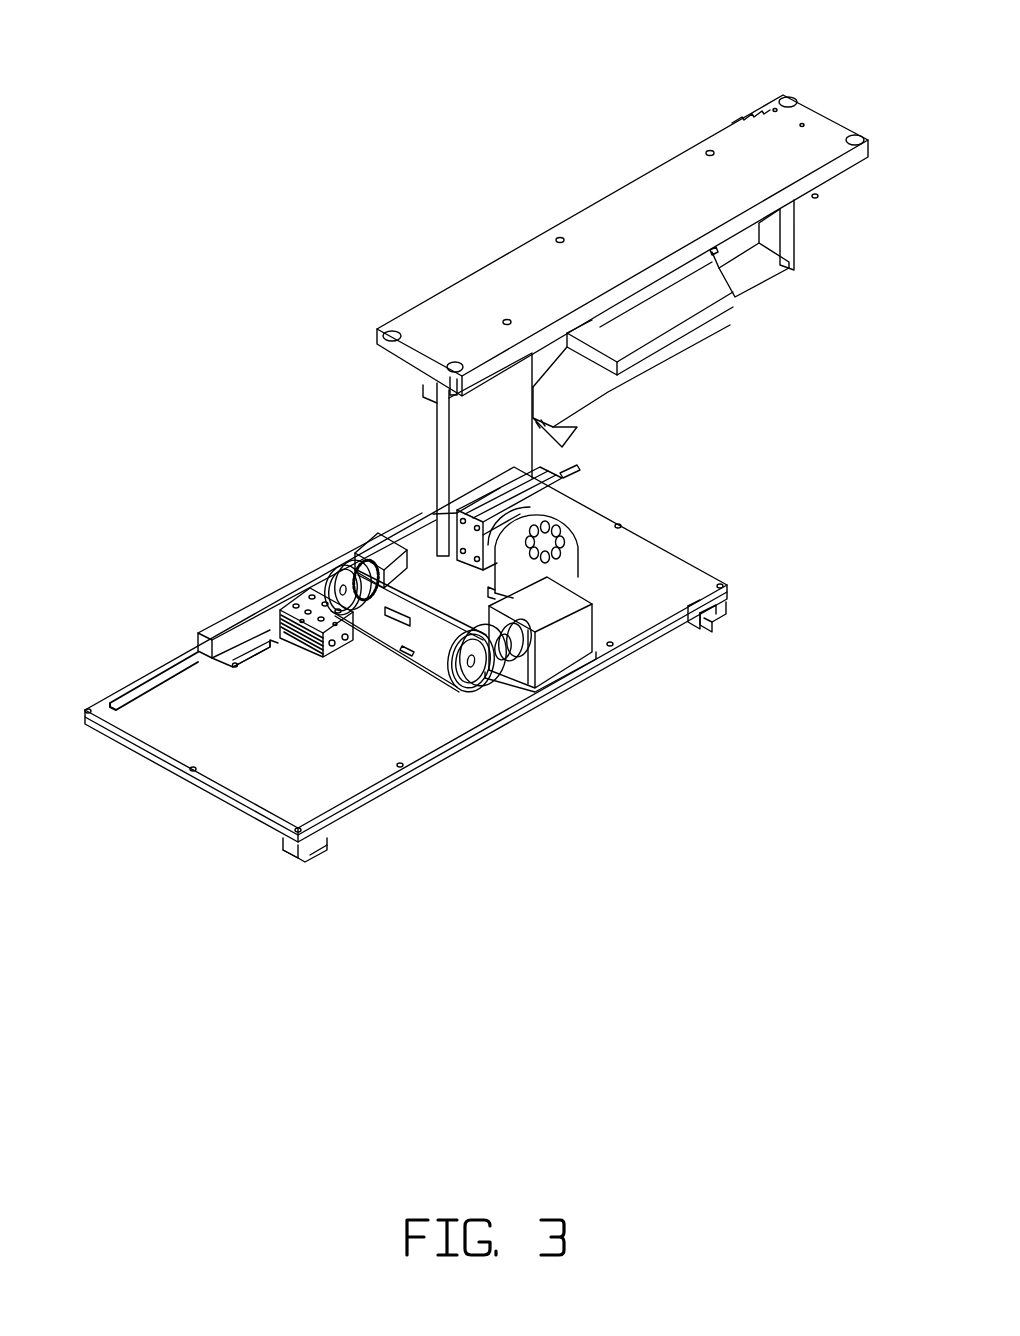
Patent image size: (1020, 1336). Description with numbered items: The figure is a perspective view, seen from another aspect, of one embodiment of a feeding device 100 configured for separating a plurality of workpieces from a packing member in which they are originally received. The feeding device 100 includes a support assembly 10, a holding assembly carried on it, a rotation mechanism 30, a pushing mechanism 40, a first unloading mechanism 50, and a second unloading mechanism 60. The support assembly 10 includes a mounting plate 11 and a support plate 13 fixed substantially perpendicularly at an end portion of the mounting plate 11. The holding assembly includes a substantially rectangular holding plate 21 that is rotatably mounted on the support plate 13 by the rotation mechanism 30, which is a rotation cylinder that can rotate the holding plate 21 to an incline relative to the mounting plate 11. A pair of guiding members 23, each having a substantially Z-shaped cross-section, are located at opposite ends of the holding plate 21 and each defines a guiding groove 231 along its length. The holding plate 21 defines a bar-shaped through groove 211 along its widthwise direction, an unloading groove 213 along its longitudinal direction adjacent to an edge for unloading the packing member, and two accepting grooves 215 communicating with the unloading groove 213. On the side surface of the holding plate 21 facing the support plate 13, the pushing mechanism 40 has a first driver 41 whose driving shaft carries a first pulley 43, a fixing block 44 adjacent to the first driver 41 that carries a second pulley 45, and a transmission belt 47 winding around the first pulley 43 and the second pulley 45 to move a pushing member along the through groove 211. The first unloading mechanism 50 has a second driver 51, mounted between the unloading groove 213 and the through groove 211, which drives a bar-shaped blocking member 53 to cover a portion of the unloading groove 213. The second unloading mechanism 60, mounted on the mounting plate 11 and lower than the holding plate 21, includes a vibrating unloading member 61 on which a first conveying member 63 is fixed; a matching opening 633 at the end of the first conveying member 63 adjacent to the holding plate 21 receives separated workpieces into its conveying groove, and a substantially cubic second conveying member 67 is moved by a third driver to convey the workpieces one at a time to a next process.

The feeding device 100 is at (512, 37).
The support assembly 10 is at (412, 203).
The mounting plate 11 is at (497, 290).
The support plate 13 is at (492, 400).
The holding plate 21 is at (647, 567).
The guiding member 23 is at (732, 599).
The guiding groove 231 is at (703, 623).
The through groove 211 is at (430, 670).
The unloading groove 213 is at (143, 688).
The accepting groove 215 is at (248, 668).
The rotation mechanism 30 is at (567, 525).
The pushing mechanism 40 is at (597, 621).
The first driver 41 is at (567, 645).
The first pulley 43 is at (477, 677).
The fixing block 44 is at (372, 555).
The second pulley 45 is at (337, 587).
The transmission belt 47 is at (497, 660).
The first unloading mechanism 50 is at (265, 593).
The second driver 51 is at (317, 588).
The blocking member 53 is at (247, 642).
The second unloading mechanism 60 is at (765, 311).
The unloading member 61 is at (660, 320).
The first conveying member 63 is at (767, 268).
The second conveying member 67 is at (777, 235).
The matching opening 633 is at (540, 424).